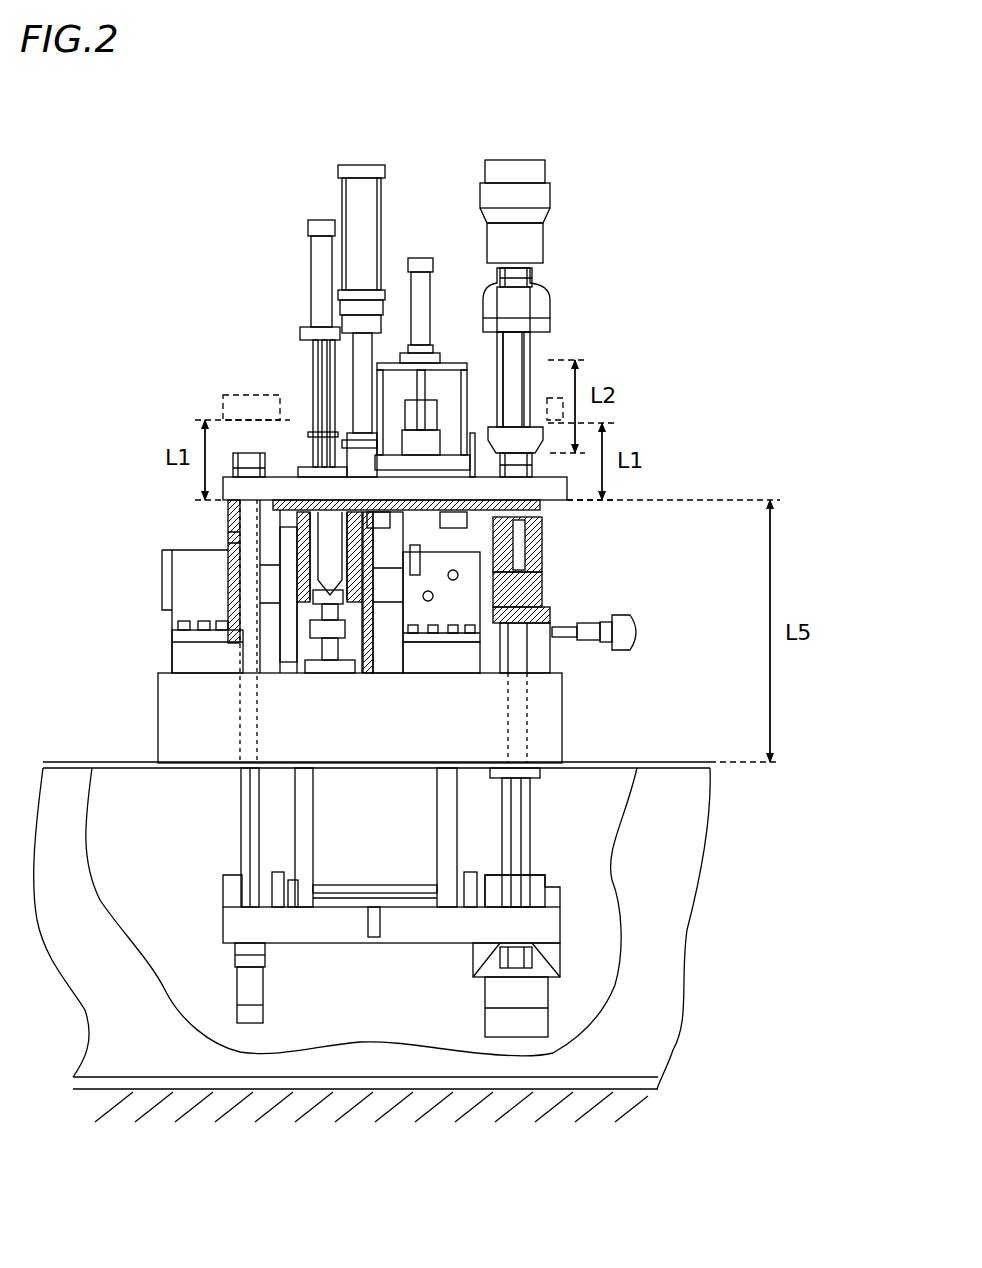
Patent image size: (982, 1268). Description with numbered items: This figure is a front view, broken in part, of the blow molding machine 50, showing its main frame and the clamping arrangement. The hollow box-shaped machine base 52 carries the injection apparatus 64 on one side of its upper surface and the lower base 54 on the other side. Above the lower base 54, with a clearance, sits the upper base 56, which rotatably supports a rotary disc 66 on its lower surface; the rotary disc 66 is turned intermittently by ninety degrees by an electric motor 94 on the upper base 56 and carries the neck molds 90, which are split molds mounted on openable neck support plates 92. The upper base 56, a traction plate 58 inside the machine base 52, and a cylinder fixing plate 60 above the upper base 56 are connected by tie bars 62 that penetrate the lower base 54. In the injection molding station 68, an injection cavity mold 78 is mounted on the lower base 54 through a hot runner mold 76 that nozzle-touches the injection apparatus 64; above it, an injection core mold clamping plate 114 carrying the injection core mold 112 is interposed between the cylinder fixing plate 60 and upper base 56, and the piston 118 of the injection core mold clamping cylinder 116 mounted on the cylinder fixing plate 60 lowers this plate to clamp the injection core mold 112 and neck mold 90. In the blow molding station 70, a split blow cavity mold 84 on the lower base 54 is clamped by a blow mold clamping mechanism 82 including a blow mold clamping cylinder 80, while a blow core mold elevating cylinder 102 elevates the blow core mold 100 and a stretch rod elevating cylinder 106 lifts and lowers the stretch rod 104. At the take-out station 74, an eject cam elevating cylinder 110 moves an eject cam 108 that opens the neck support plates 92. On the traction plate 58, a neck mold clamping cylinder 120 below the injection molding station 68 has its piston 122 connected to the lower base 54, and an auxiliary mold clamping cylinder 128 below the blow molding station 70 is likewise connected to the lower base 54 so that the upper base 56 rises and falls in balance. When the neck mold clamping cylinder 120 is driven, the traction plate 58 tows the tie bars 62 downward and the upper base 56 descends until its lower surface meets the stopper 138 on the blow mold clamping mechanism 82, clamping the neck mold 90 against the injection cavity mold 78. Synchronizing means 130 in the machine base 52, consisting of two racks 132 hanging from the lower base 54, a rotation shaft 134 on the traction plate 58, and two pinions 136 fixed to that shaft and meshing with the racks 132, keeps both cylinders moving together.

The blow molding machine 50 is at (676, 300).
The machine base 52 is at (680, 816).
The lower base 54 is at (540, 712).
The upper base 56 is at (570, 500).
The traction plate 58 is at (415, 935).
The cylinder fixing plate 60 is at (545, 300).
The tie bars 62 is at (247, 577).
The injection apparatus 64 is at (632, 628).
The rotary disc 66 is at (290, 500).
The injection molding station 68 is at (572, 594).
The blow molding station 70 is at (198, 530).
The take-out station 74 is at (413, 250).
The hot runner mold 76 is at (540, 650).
The injection cavity mold 78 is at (540, 560).
The blow mold clamping cylinder 80 is at (188, 583).
The blow mold clamping mechanism 82 is at (214, 600).
The blow cavity mold 84 is at (305, 645).
The neck molds 90 is at (450, 562).
The neck support plates 92 is at (420, 506).
The electric motor 94 is at (440, 416).
The blow core mold 100 is at (330, 497).
The blow core mold elevating cylinder 102 is at (358, 192).
The stretch rod 104 is at (362, 655).
The stretch rod elevating cylinder 106 is at (320, 272).
The eject cam 108 is at (458, 522).
The eject cam elevating cylinder 110 is at (425, 290).
The injection core mold 112 is at (545, 536).
The injection core mold clamping plate 114 is at (560, 442).
The injection core mold clamping cylinder 116 is at (530, 170).
The piston 118 is at (540, 365).
The neck mold clamping cylinder 120 is at (525, 1030).
The piston 122 is at (535, 848).
The auxiliary mold clamping cylinder 128 is at (255, 995).
The synchronizing means 130 is at (278, 835).
The racks 132 is at (443, 823).
The rotation shaft 134 is at (355, 882).
The pinions 136 is at (465, 872).
The stopper 138 is at (223, 478).